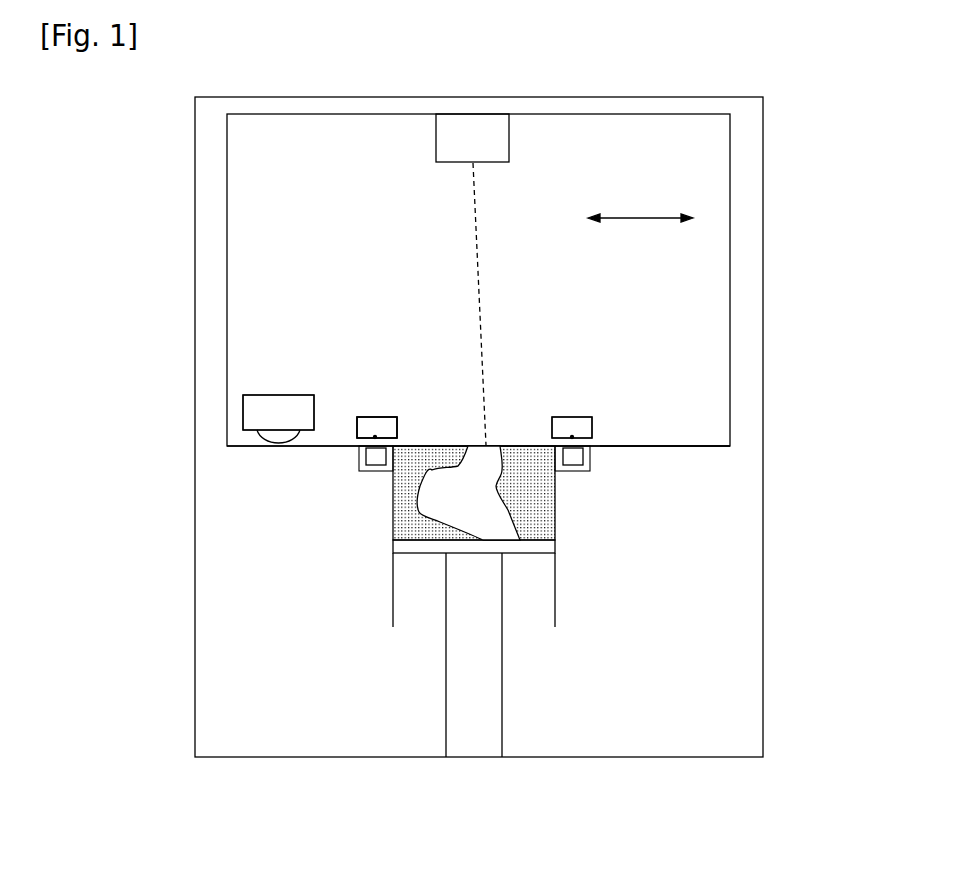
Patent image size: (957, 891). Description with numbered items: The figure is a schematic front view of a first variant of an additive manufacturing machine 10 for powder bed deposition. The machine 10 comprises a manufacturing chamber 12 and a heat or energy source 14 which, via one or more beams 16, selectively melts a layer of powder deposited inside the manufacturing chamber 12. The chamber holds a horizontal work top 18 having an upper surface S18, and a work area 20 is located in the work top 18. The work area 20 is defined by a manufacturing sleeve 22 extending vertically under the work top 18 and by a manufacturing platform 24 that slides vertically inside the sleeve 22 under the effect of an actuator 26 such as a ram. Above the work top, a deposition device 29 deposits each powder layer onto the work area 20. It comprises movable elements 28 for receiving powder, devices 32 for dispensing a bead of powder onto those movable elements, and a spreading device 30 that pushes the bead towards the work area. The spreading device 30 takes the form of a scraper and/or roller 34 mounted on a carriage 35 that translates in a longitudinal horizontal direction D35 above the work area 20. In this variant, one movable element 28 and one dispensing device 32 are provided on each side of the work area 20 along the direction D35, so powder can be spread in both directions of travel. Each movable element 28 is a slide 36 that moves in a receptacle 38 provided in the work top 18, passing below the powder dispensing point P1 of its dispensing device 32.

The additive manufacturing machine 10 is at (778, 439).
The manufacturing chamber 12 is at (730, 247).
The heat or energy source 14 is at (509, 138).
The beam 16 is at (477, 259).
The horizontal work top 18 is at (680, 446).
The upper surface S18 is at (687, 446).
The work area 20 is at (510, 379).
The manufacturing sleeve 22 is at (555, 600).
The manufacturing platform 24 is at (430, 550).
The actuator 26 is at (492, 715).
The movable element 28 is at (360, 433).
The deposition device 29 is at (382, 305).
The spreading device 30 is at (283, 386).
The dispensing device 32 is at (372, 417).
The roller 34 is at (275, 443).
The carriage 35 is at (267, 402).
The slide 36 is at (357, 460).
The receptacle 38 is at (377, 473).
The longitudinal horizontal direction D35 is at (640, 203).
The powder dispensing point P1 is at (375, 437).